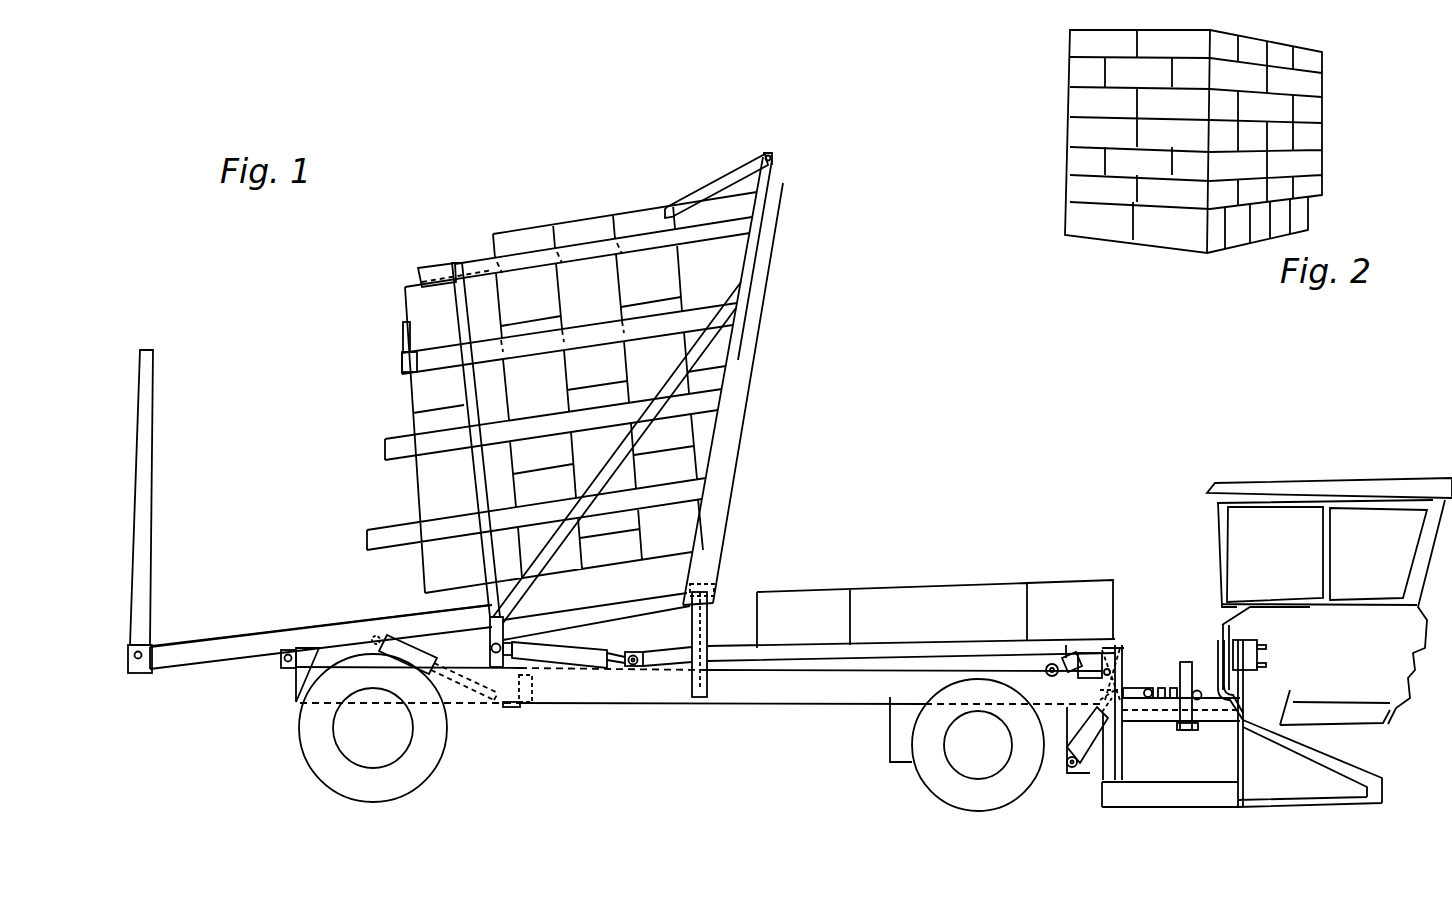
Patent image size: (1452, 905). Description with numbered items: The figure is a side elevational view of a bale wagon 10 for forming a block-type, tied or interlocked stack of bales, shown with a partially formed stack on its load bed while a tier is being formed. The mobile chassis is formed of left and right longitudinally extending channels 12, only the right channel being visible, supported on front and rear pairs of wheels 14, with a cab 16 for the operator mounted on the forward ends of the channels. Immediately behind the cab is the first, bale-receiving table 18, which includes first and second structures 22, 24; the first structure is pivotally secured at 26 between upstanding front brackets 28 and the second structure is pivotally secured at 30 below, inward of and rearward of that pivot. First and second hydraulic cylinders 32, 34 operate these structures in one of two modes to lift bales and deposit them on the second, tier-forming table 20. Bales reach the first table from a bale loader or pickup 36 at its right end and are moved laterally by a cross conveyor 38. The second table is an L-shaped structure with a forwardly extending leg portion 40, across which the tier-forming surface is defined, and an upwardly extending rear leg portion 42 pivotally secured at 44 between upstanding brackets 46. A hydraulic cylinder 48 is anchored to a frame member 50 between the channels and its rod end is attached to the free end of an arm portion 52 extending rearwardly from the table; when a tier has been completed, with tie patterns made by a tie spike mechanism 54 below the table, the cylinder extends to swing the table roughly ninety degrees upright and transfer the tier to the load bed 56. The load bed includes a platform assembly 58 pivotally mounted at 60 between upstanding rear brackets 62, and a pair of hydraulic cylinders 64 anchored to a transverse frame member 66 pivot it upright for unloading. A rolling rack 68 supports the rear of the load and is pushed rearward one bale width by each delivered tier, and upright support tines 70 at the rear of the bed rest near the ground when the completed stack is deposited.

The bale wagon 10 is at (922, 375).
The longitudinally extending channels 12 is at (817, 705).
The wheels 14 is at (300, 755).
The cab 16 is at (1395, 478).
The first, bale-receiving table 18 is at (1172, 678).
The second, tier-forming table 20 is at (878, 660).
The first structure 22 is at (1170, 712).
The second structure 24 is at (1130, 680).
The pivotal securement of first structure 26 is at (1120, 622).
The upstanding front brackets 28 is at (1090, 653).
The pivotal securement of second structure 30 is at (1100, 690).
The first hydraulic cylinder 32 is at (1097, 745).
The second hydraulic cylinder 34 is at (1068, 760).
The bale loader or pickup 36 is at (1160, 808).
The cross conveyor 38 is at (1185, 660).
The forwardly extending leg portion 40 is at (786, 664).
The upwardly extending rear leg portion 42 is at (690, 629).
The pivot point of second table 44 is at (716, 590).
The upstanding brackets 46 is at (706, 699).
The hydraulic cylinder 48 is at (580, 668).
The frame member 50 is at (508, 638).
The arm portion 52 is at (665, 668).
The tie spike mechanism 54 is at (1062, 640).
The load bed 56 is at (245, 626).
The platform assembly 58 is at (276, 628).
The pivotal mounting of platform assembly 60 is at (283, 657).
The upstanding rear brackets 62 is at (290, 684).
The hydraulic cylinders 64 is at (430, 656).
The transverse frame member 66 is at (524, 706).
The rolling rack 68 is at (402, 345).
The upright support tines 70 is at (155, 368).